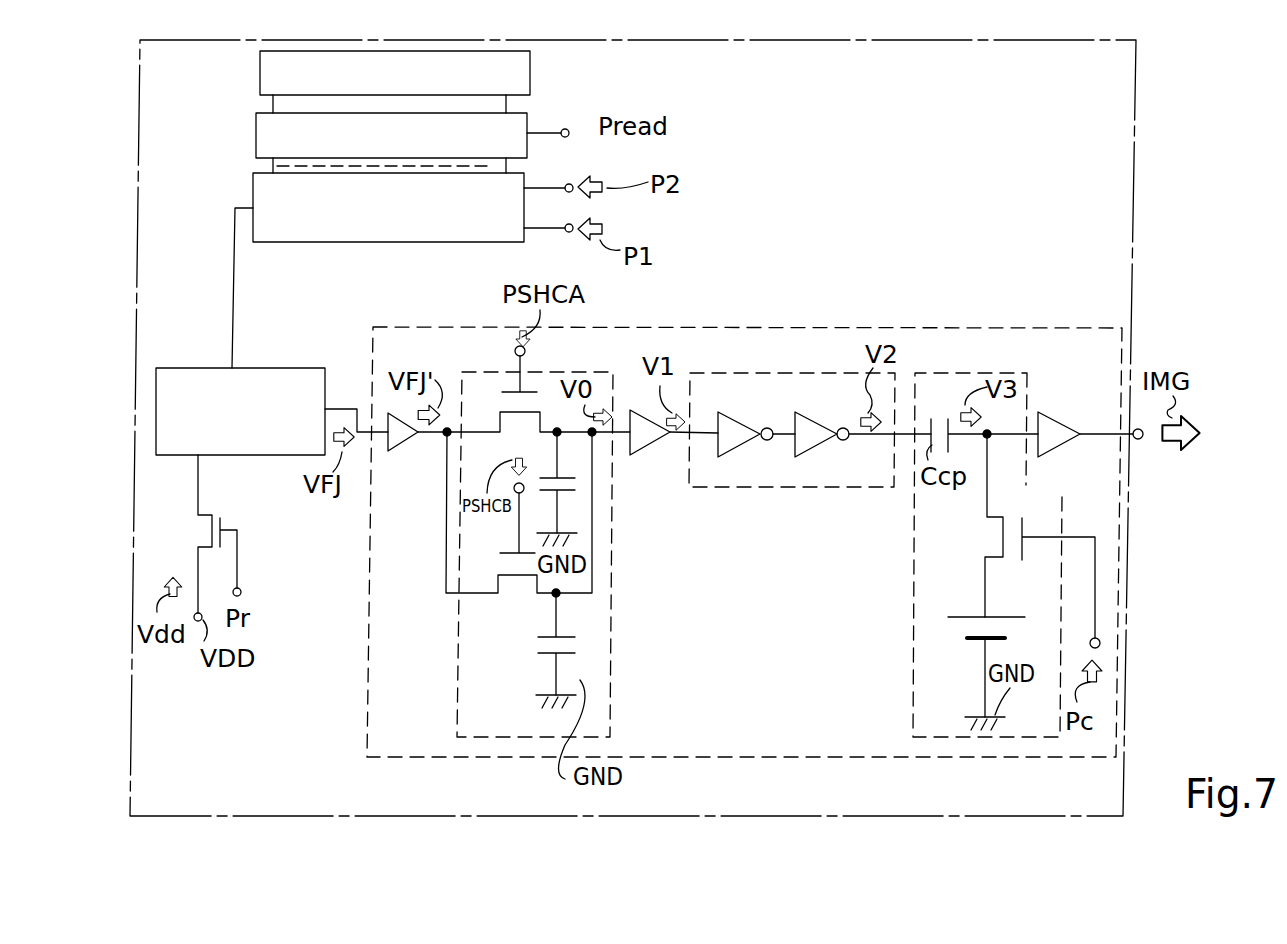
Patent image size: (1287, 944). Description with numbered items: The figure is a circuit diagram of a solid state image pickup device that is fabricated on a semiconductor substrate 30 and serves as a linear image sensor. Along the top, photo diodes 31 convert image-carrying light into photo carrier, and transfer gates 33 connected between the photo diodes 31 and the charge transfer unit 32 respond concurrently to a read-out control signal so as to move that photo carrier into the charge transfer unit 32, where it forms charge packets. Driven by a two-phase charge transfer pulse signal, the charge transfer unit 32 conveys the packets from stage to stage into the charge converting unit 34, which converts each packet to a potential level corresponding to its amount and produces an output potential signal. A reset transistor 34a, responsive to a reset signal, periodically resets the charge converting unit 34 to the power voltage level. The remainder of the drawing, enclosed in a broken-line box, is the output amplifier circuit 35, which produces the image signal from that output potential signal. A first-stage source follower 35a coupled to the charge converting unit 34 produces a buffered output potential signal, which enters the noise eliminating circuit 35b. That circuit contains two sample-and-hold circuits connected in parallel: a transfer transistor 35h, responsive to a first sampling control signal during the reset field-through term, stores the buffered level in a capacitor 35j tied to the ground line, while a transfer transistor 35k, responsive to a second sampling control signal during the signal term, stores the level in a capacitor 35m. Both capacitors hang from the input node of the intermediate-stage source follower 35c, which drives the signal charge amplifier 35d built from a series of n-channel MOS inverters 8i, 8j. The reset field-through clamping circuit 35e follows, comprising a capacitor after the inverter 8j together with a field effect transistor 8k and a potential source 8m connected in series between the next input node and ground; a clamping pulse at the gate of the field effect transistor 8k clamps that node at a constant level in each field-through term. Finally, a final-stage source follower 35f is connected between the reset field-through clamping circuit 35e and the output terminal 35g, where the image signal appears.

The semiconductor substrate 30 is at (1135, 210).
The photo diodes 31 is at (533, 75).
The charge transfer unit 32 is at (392, 242).
The transfer gates 33 is at (256, 137).
The charge converting unit 34 is at (278, 455).
The reset transistor 34a is at (223, 519).
The output amplifier circuit 35 is at (957, 328).
The first-stage source follower 35a is at (400, 452).
The noise eliminating circuit 35b is at (612, 693).
The intermediate-stage source follower 35c is at (650, 455).
The signal charge amplifier 35d is at (778, 487).
The reset field-through clamping circuit 35e is at (913, 652).
The final-stage source follower 35f is at (1060, 414).
The output terminal 35g is at (1143, 440).
The transfer transistor 35h is at (530, 392).
The capacitor 35j is at (567, 493).
The transfer transistor 35k is at (520, 577).
The capacitor 35m is at (548, 656).
The inverter 8i is at (755, 395).
The inverter 8j is at (840, 417).
The field effect transistor 8k is at (1002, 533).
The potential source 8m is at (997, 617).